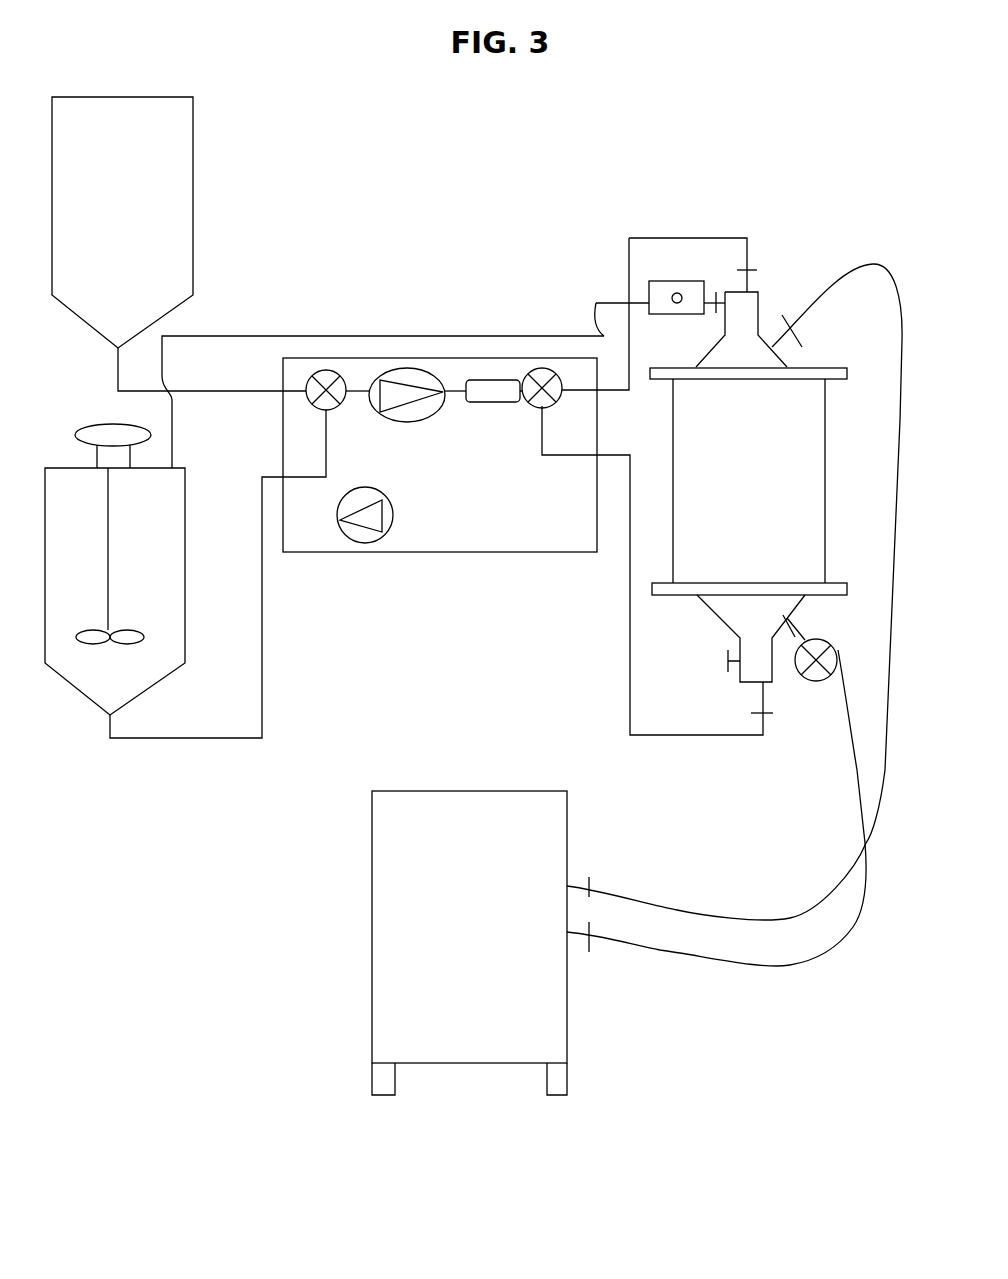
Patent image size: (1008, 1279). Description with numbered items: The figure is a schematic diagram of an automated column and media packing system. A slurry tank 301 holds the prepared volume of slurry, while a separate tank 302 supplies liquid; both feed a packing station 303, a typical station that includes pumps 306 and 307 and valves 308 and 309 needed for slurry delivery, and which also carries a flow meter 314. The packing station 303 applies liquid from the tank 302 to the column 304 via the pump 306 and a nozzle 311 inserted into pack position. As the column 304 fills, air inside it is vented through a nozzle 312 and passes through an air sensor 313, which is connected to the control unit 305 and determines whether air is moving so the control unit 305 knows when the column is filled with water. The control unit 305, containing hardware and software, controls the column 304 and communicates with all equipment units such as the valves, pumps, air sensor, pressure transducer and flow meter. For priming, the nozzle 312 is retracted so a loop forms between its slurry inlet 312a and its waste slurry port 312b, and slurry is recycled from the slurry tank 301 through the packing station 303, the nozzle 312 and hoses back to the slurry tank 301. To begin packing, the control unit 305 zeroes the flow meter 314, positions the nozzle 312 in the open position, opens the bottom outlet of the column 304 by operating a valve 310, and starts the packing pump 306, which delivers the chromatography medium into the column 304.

The slurry tank 301 is at (115, 569).
The tank 302 is at (122, 222).
The packing station 303 is at (440, 455).
The column 304 is at (748, 481).
The control unit 305 is at (469, 943).
The packing pump 306 is at (403, 422).
The pump 307 is at (393, 520).
The valve 308 is at (323, 383).
The valve 309 is at (540, 380).
The valve 310 is at (817, 672).
The nozzle 311 is at (738, 608).
The nozzle 312 is at (749, 323).
The slurry inlet (SIT) 312a is at (749, 257).
The waste slurry port (SOT) 312b is at (723, 317).
The air sensor 313 is at (683, 268).
The flow meter 314 is at (498, 402).